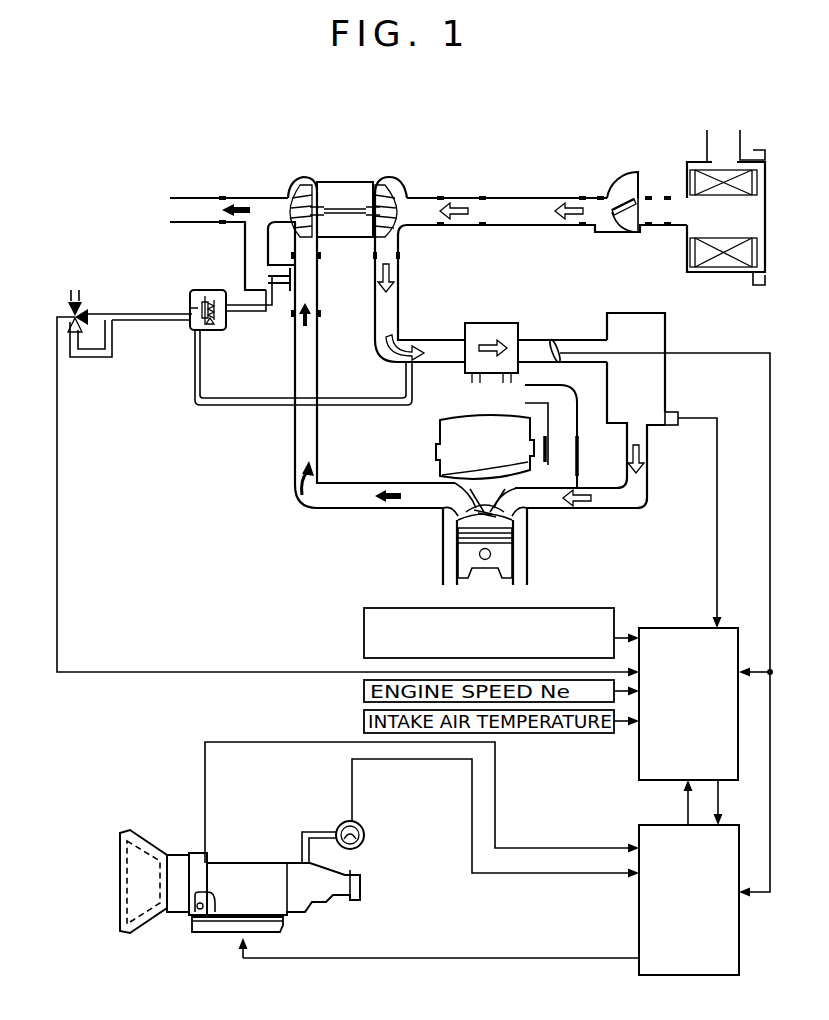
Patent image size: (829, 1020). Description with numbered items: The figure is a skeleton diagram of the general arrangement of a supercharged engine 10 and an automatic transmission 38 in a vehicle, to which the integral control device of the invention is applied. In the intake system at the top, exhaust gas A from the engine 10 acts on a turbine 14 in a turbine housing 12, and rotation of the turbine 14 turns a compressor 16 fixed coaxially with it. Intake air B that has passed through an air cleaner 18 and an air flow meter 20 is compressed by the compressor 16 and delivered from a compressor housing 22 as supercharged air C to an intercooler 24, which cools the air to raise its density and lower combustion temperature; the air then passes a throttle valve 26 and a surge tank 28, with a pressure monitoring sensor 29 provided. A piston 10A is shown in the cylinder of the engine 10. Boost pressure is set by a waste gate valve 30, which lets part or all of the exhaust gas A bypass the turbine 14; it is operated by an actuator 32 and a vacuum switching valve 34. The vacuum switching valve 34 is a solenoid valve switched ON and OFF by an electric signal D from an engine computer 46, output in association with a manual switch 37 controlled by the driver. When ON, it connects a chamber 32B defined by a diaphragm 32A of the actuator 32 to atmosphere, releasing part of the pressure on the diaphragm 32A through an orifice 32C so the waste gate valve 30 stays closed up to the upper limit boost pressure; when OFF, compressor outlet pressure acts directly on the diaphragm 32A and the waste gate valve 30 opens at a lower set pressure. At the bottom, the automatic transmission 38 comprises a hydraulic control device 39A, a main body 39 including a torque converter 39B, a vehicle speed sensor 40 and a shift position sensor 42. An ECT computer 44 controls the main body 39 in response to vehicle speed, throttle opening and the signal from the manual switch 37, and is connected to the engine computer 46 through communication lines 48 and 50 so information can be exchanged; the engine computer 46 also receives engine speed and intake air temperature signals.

The engine 10 is at (548, 557).
The piston 10A is at (513, 523).
The turbine housing 12 is at (312, 174).
The turbine 14 is at (303, 178).
The compressor 16 is at (395, 188).
The air cleaner 18 is at (720, 275).
The air flow meter 20 is at (618, 203).
The compressor housing 22 is at (384, 176).
The intercooler 24 is at (518, 331).
The throttle valve 26 is at (560, 345).
The surge tank 28 is at (667, 372).
The pressure monitoring sensor 29 is at (672, 430).
The waste gate valve 30 is at (291, 288).
The actuator 32 is at (180, 300).
The diaphragm 32A is at (210, 324).
The chamber 32B is at (196, 320).
The orifice 32C is at (115, 330).
The vacuum switching valve 34 is at (89, 300).
The manual switch 37 is at (527, 608).
The automatic transmission 38 is at (214, 846).
The main body 39 is at (270, 906).
The hydraulic control device 39A is at (228, 936).
The torque converter 39B is at (143, 850).
The vehicle speed sensor 40 is at (367, 834).
The shift position sensor 42 is at (206, 931).
The ECT computer 44 is at (691, 978).
The engine computer 46 is at (638, 757).
The communication line 48 is at (686, 806).
The communication line 50 is at (721, 805).
The exhaust gas A is at (302, 488).
The intake air B is at (568, 228).
The supercharged air C is at (391, 281).
The electric signal D is at (337, 497).